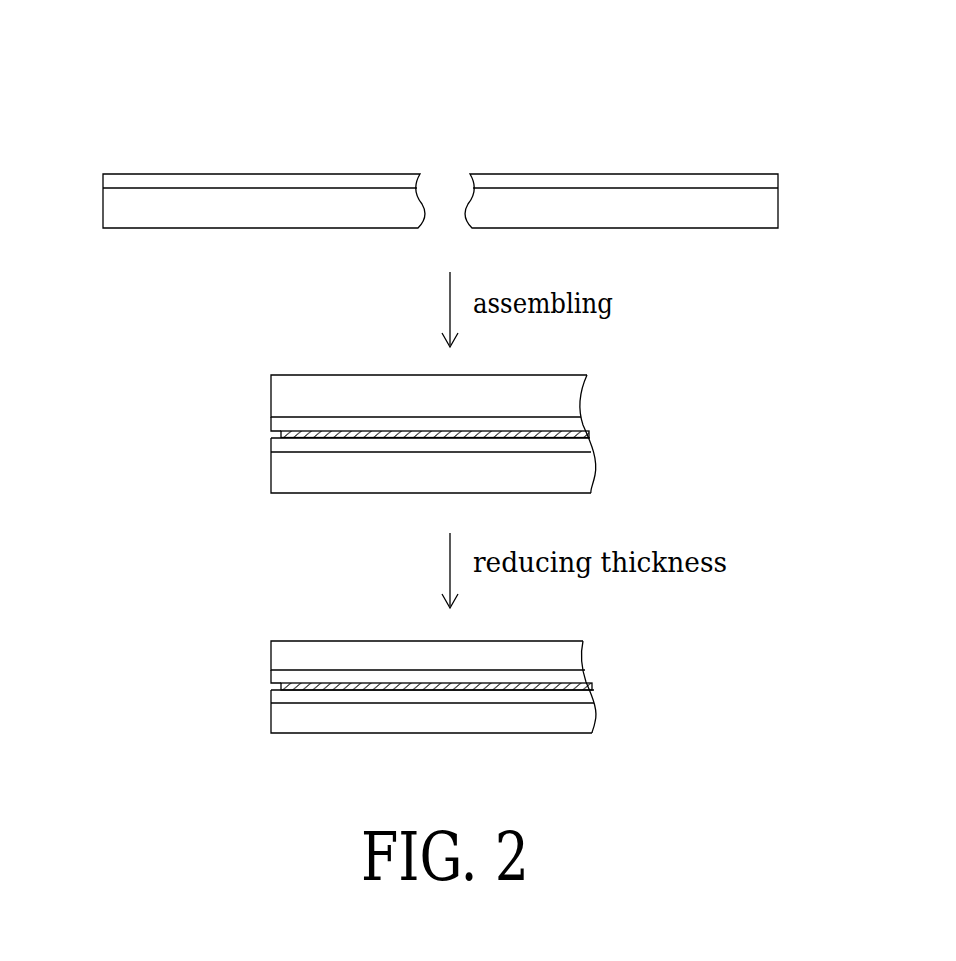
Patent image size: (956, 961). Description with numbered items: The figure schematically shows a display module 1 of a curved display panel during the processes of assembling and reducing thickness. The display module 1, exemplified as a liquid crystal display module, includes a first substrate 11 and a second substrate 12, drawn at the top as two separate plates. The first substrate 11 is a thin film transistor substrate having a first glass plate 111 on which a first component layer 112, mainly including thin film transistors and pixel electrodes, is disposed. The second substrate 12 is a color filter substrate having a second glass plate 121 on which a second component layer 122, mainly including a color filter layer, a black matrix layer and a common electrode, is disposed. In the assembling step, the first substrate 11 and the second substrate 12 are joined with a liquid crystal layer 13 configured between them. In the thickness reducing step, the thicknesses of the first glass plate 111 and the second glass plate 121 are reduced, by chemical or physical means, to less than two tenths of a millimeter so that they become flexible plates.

The display module 1 is at (365, 70).
The first substrate 11 is at (344, 160).
The second substrate 12 is at (549, 160).
The liquid crystal layer 13 is at (590, 433).
The first glass plate 111 is at (107, 206).
The first component layer 112 is at (105, 181).
The second glass plate 121 is at (774, 206).
The second component layer 122 is at (768, 180).